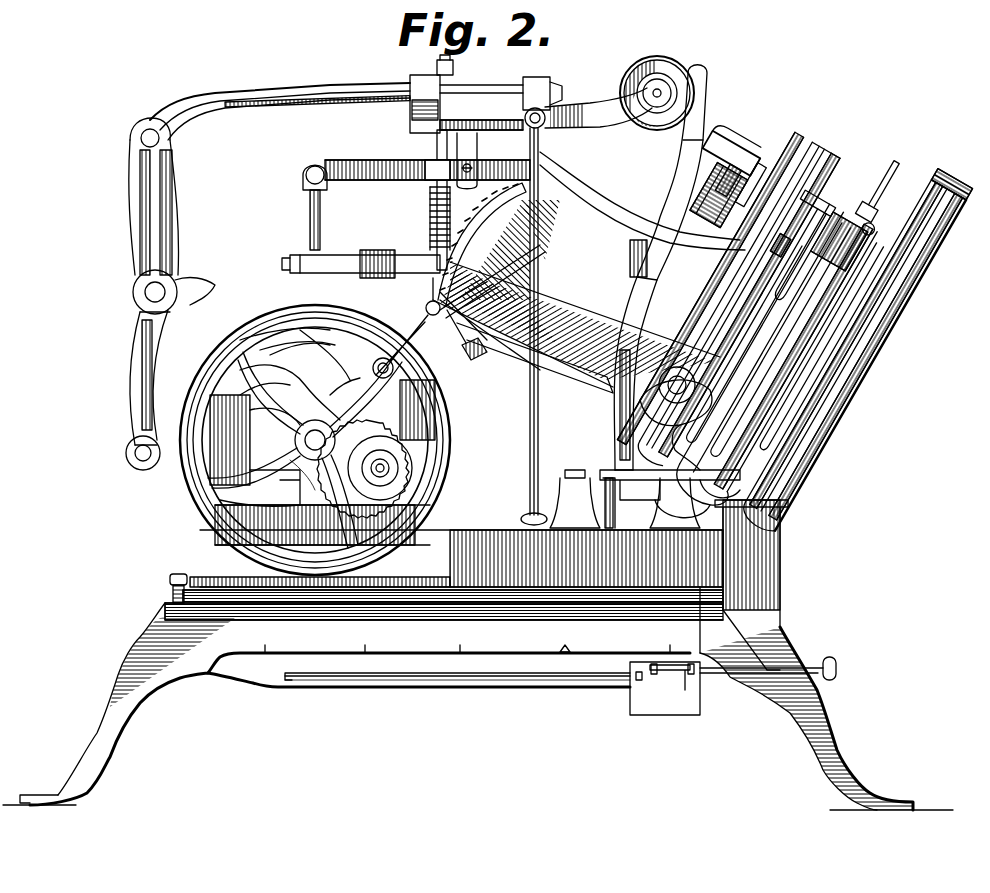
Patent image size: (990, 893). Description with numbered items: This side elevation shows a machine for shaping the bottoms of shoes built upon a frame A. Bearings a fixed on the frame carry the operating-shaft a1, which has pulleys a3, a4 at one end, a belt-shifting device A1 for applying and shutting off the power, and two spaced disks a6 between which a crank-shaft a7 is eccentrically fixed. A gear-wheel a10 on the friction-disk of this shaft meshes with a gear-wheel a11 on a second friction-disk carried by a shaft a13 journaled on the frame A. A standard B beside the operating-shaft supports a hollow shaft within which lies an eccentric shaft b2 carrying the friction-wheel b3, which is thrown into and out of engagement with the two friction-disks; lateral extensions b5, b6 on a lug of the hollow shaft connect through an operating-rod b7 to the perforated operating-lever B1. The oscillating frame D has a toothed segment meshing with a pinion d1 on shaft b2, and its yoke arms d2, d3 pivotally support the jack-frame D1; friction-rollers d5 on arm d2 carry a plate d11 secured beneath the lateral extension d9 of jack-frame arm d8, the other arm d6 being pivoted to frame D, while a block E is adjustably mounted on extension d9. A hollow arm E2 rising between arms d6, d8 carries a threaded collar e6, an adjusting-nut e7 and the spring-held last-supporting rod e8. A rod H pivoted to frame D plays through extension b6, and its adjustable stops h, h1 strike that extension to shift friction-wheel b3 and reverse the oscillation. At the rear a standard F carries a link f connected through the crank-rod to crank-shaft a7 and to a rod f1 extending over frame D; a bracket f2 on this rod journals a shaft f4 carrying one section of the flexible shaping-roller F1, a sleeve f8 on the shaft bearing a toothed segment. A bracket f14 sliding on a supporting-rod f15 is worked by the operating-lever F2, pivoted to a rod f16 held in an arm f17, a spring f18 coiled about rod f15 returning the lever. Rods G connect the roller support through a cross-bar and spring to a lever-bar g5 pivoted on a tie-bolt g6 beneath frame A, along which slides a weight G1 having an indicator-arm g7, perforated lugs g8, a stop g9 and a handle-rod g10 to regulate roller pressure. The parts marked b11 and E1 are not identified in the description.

The frame A is at (478, 698).
The bearings a is at (240, 520).
The operating-shaft a1 is at (300, 458).
The pulley a3 is at (290, 375).
The belt-shifting device A1 is at (305, 385).
The pulley a4 is at (250, 400).
The disks a6 is at (280, 423).
The crank-shaft a7 is at (135, 452).
The gear-wheel a10 is at (240, 500).
The gear-wheel a11 is at (385, 470).
The shaft a13 is at (400, 460).
The standard B is at (405, 430).
The operating-lever B1 is at (642, 214).
The shaft b2 is at (430, 360).
The friction-wheel b3 is at (480, 355).
The lateral extension b5 is at (345, 385).
The lateral extension b6 is at (425, 262).
The operating-rod b7 is at (565, 380).
The crank pin b11 is at (400, 341).
The oscillating frame D is at (845, 430).
The jack-frame D1 is at (784, 343).
The pinion d1 is at (499, 276).
The arm d2 is at (715, 288).
The arm d3 is at (835, 405).
The friction-rollers d5 is at (705, 210).
The arm d6 is at (893, 245).
The arm d8 is at (818, 242).
The lateral extension d9 is at (860, 190).
The plate d11 is at (775, 170).
The block E is at (770, 180).
The flange E1 is at (745, 150).
The hollow arm E2 is at (681, 442).
The threaded collar e6 is at (870, 235).
The adjusting-nut e7 is at (872, 222).
The last-supporting rod e8 is at (870, 195).
The standard F is at (128, 331).
The link f is at (148, 220).
The flexible shaping-roller F1 is at (660, 244).
The operating-lever F2 is at (590, 190).
The rod f1 is at (302, 85).
The bracket f2 is at (418, 78).
The shaft f4 is at (540, 78).
The sleeve f8 is at (432, 140).
The bracket f14 is at (500, 110).
The supporting-rod f15 is at (455, 78).
The rod f16 is at (308, 218).
The arm f17 is at (345, 255).
The spring f18 is at (432, 205).
The rods G is at (543, 200).
The weight G1 is at (670, 686).
The lever-bar g5 is at (452, 676).
The tie-bolt g6 is at (170, 586).
The indicator-arm g7 is at (670, 680).
The perforated lugs g8 is at (655, 680).
The stop g9 is at (638, 685).
The handle-rod g10 is at (532, 680).
The rod H is at (540, 420).
The stop h is at (372, 258).
The stop h1 is at (540, 290).